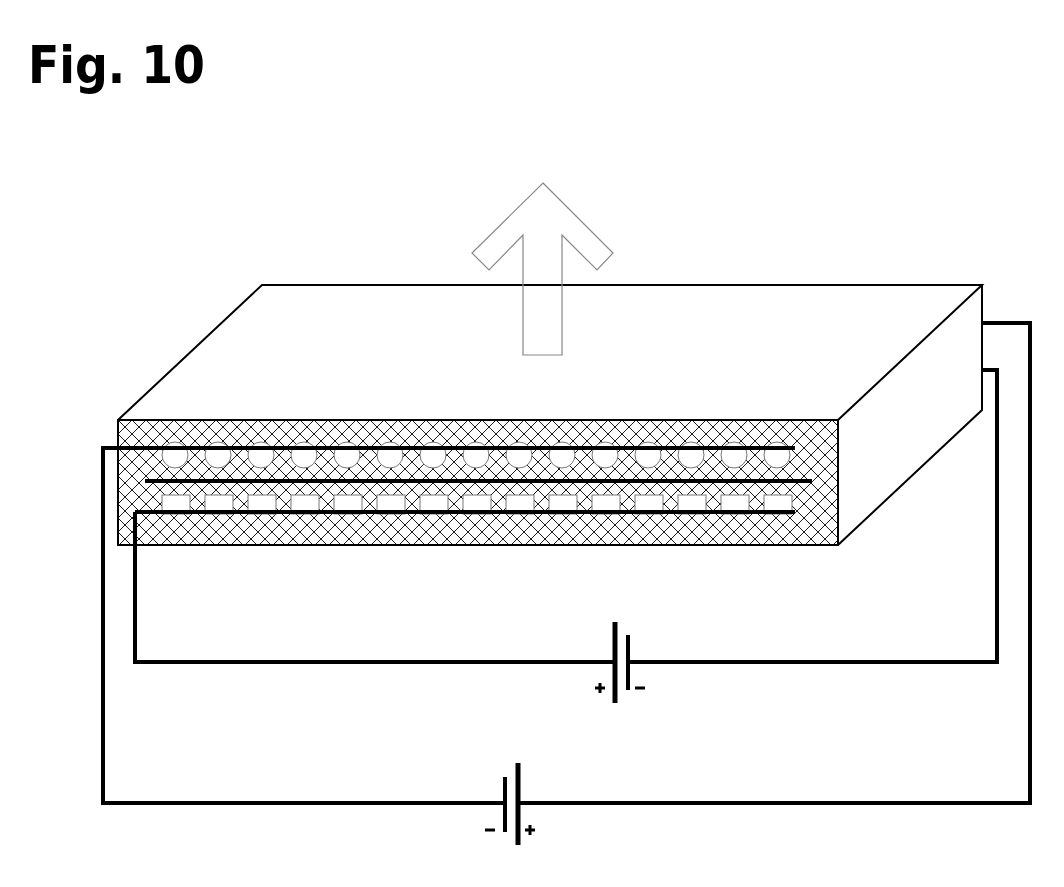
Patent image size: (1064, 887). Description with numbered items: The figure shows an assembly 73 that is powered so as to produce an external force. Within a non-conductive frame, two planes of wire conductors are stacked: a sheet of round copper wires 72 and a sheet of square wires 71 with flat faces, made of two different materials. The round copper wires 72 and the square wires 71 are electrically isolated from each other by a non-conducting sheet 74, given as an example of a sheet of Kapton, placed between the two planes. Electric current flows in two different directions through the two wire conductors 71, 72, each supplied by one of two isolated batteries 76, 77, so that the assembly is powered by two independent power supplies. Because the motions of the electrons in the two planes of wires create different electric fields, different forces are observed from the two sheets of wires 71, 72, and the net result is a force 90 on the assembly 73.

The square wires 71 is at (800, 529).
The round copper wires 72 is at (742, 436).
The assembly 73 is at (848, 443).
The non-conducting sheet 74 is at (478, 481).
The battery 76 is at (650, 620).
The battery 77 is at (533, 764).
The force 90 is at (593, 214).